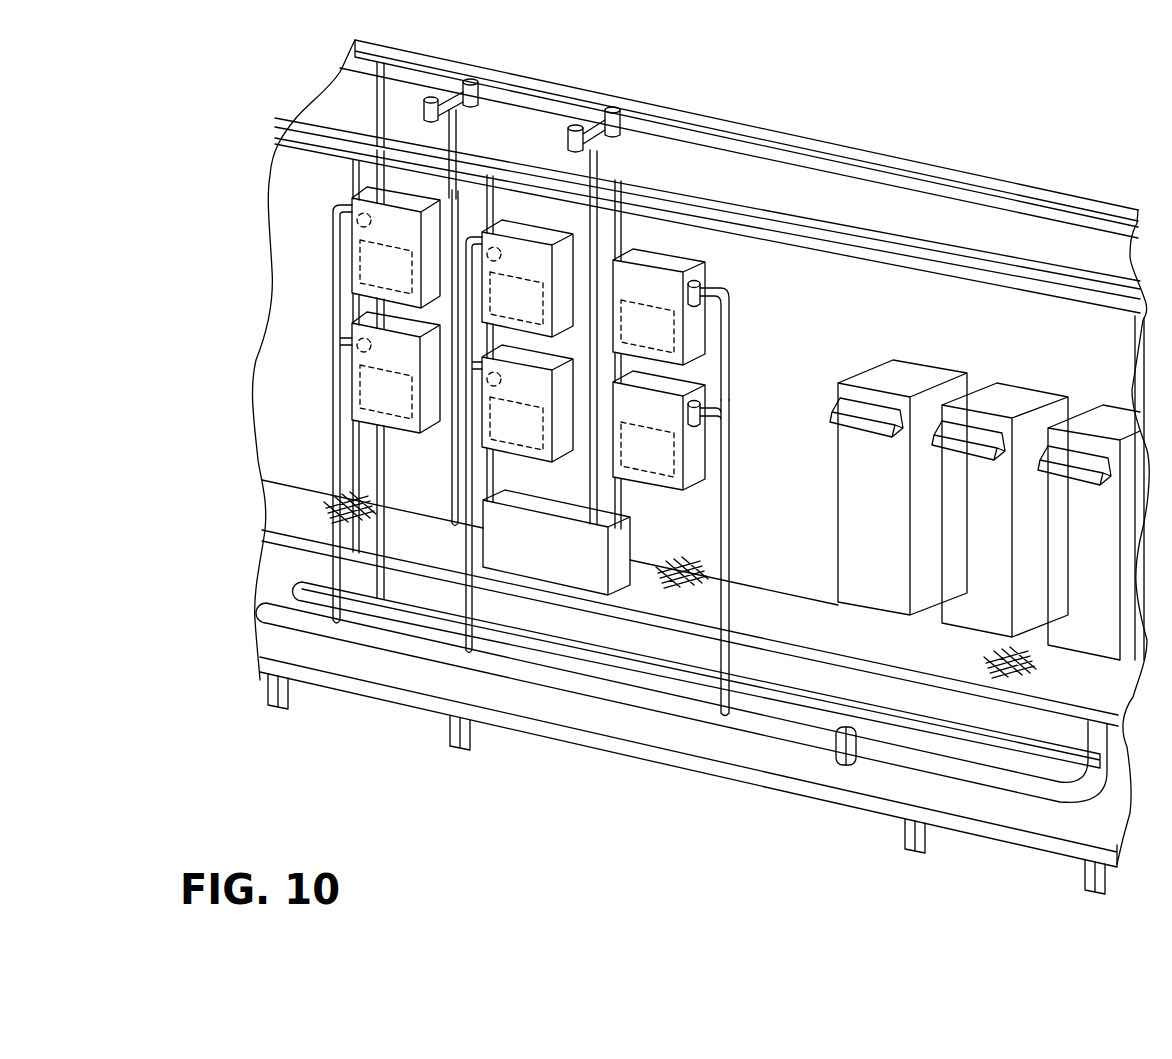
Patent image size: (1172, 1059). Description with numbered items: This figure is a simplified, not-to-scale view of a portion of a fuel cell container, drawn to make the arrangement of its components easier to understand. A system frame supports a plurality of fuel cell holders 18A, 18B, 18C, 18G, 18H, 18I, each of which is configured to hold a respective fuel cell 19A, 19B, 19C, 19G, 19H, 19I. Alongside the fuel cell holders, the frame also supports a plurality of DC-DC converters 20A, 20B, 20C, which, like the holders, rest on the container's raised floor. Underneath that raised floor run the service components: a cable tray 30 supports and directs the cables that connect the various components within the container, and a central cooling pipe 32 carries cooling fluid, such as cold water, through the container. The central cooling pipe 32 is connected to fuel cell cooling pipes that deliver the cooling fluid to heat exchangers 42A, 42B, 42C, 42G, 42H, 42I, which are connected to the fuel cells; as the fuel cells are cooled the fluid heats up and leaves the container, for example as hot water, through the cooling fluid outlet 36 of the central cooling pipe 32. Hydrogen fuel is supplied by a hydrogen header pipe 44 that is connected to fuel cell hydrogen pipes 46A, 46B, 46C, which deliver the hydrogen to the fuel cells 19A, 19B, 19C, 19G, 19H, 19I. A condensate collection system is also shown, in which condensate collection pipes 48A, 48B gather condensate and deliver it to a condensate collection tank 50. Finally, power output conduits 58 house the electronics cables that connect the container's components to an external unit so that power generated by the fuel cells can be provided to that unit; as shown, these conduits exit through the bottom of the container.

The fuel cell holder 18A is at (392, 193).
The fuel cell holder 18B is at (562, 252).
The fuel cell holder 18C is at (690, 258).
The fuel cell holder 18G is at (320, 425).
The fuel cell holder 18H is at (540, 462).
The fuel cell holder 18I is at (729, 503).
The fuel cell 19A is at (372, 262).
The fuel cell 19B is at (500, 290).
The fuel cell 19C is at (708, 292).
The fuel cell 19G is at (367, 367).
The fuel cell 19H is at (520, 420).
The fuel cell 19I is at (653, 447).
The DC-DC converter 20A is at (898, 487).
The DC-DC converter 20B is at (1000, 510).
The DC-DC converter 20C is at (1089, 532).
The cable tray 30 is at (983, 778).
The central cooling pipe 32 is at (600, 660).
The cooling fluid outlet 36 is at (293, 586).
The heat exchanger 42A is at (372, 220).
The heat exchanger 42B is at (500, 252).
The heat exchanger 42C is at (689, 283).
The heat exchanger 42G is at (360, 347).
The heat exchanger 42H is at (490, 377).
The heat exchanger 42I is at (703, 390).
The hydrogen header pipe 44 is at (745, 128).
The fuel cell hydrogen pipe 46A is at (356, 310).
The fuel cell hydrogen pipe 46B is at (492, 199).
The fuel cell hydrogen pipe 46C is at (630, 233).
The condensate collection pipe 48A is at (463, 93).
The condensate collection pipe 48B is at (598, 127).
The condensate collection tank 50 is at (556, 542).
The power output conduit 58 is at (262, 690).